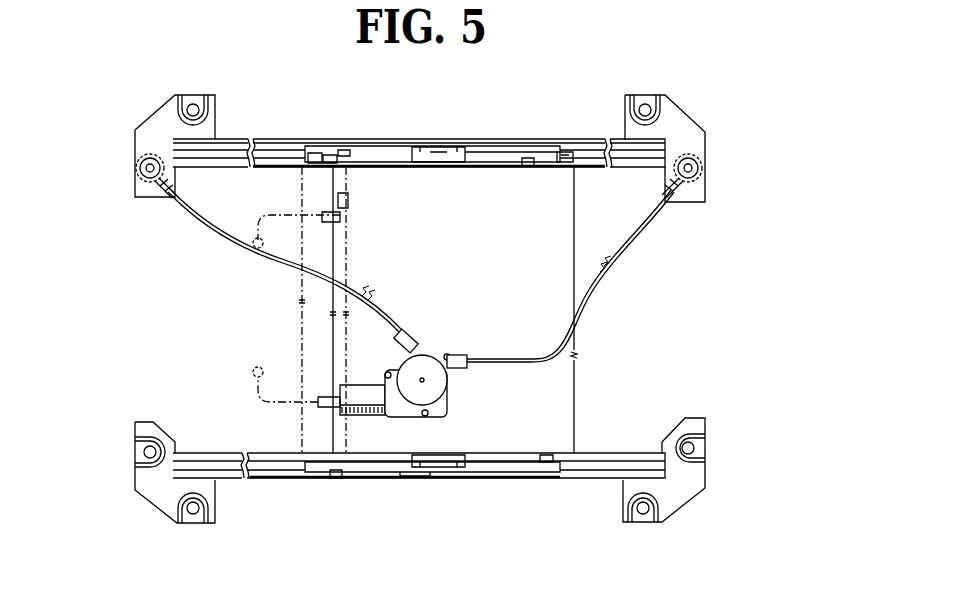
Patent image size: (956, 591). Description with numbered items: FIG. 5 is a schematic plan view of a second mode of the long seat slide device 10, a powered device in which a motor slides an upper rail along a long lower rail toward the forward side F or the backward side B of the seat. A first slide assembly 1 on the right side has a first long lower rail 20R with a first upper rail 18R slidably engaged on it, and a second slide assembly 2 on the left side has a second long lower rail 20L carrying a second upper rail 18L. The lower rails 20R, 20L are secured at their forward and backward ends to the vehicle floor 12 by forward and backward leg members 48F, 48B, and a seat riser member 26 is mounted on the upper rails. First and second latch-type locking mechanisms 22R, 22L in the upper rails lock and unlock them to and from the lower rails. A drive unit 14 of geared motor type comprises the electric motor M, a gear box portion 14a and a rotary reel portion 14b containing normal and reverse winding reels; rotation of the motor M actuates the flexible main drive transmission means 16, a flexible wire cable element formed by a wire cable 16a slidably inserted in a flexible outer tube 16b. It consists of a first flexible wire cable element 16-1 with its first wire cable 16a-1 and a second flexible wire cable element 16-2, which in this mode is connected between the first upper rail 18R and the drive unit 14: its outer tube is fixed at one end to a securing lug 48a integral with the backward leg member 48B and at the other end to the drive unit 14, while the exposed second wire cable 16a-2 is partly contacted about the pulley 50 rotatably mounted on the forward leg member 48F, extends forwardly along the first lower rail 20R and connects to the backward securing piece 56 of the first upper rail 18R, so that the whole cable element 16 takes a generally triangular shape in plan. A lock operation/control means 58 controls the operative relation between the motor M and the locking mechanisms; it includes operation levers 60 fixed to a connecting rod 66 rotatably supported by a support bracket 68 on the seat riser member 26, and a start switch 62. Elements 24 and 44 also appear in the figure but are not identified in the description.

The first slide assembly 1 is at (605, 108).
The second slide assembly 2 is at (575, 503).
The long seat slide device 10 is at (762, 212).
The vehicle floor 12 is at (746, 352).
The drive unit 14 is at (431, 380).
The gear box portion 14a is at (407, 418).
The rotary reel portion 14b is at (432, 362).
The flexible main drive transmission means 16 is at (459, 211).
The first flexible wire cable element 16-1 is at (241, 253).
The second flexible wire cable element 16-2 is at (627, 256).
The wire cable 16a is at (459, 228).
The first flexible wire cable 16a-1 is at (284, 160).
The second wire cable 16a-2 is at (586, 160).
The outer tube 16b is at (214, 242).
The first upper rail 18R is at (494, 146).
The second upper rail 18L is at (493, 472).
The first long lower rail 20R is at (256, 135).
The second long lower rail 20L is at (251, 452).
The first latch-type locking mechanism 22R is at (455, 167).
The second latch-type locking mechanism 22L is at (447, 453).
The guide member 24 is at (344, 150).
The seat riser member 26 is at (577, 374).
The stopper 44 is at (313, 152).
The forward leg member 48F is at (155, 122).
The backward leg member 48B is at (672, 112).
The securing lug 48a is at (174, 187).
The pulley 50 is at (136, 168).
The backward securing piece 56 is at (563, 151).
The lock operation/control means 58 is at (362, 230).
The operation levers 60 is at (276, 212).
The start switch 62 is at (352, 220).
The connecting rod 66 is at (346, 346).
The support bracket 68 is at (352, 195).
The electric motor M is at (362, 392).
The forward side F is at (123, 327).
The backward side B is at (792, 320).